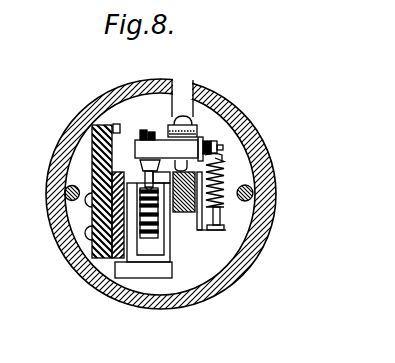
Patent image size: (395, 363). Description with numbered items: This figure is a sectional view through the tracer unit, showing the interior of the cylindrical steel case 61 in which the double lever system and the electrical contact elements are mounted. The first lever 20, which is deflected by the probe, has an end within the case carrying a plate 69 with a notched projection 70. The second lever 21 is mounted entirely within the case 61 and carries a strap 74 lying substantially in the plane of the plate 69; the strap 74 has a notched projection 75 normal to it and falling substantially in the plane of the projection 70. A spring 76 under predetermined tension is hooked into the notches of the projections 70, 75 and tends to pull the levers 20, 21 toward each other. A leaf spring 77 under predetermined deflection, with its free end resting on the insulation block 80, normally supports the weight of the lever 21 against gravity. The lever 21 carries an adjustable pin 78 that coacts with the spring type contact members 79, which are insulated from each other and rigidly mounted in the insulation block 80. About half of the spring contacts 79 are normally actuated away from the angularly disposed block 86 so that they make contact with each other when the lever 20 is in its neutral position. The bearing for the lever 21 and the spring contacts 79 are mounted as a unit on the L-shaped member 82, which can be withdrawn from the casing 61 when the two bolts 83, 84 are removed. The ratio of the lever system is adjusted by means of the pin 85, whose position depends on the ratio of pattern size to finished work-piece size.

The cylindrical steel case 61 is at (229, 281).
The pin 85 is at (185, 108).
The second lever 21 is at (162, 148).
The leaf spring 77 is at (138, 161).
The strap 74 is at (203, 143).
The notched projection 75 is at (223, 147).
The spring 76 is at (222, 172).
The notched projection 70 is at (227, 221).
The plate 69 is at (207, 226).
The first lever 20 is at (184, 214).
The spring type contact members 79 is at (164, 222).
The insulation block 80 is at (172, 270).
The L-shaped member 82 is at (105, 125).
The angularly disposed block 86 is at (110, 263).
The adjustable pin 78 is at (96, 170).
The bolt 83 is at (64, 193).
The bolt 84 is at (254, 193).